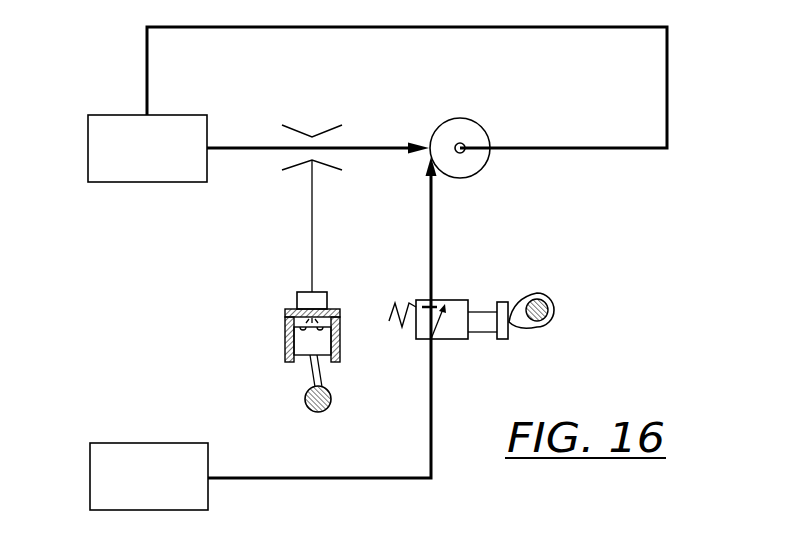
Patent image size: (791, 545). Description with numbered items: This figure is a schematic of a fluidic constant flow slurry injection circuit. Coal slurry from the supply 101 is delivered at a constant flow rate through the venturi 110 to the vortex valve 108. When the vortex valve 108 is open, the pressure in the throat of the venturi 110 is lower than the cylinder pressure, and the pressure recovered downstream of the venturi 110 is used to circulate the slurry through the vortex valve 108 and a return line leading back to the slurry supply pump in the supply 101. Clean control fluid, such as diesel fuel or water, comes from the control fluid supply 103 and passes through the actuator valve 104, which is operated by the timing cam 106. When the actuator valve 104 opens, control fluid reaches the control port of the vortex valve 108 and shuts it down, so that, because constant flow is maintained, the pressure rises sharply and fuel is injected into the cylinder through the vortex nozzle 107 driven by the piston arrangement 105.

The coal slurry supply 101 is at (148, 187).
The control fluid supply 103 is at (128, 443).
The actuator valve 104 is at (457, 300).
The cylinder 105 is at (285, 321).
The timing cam 106 is at (545, 293).
The vortex nozzle 107 is at (297, 300).
The vortex valve 108 is at (464, 118).
The venturi 110 is at (297, 172).